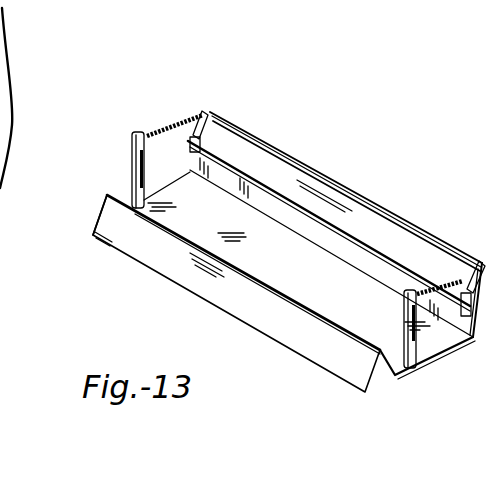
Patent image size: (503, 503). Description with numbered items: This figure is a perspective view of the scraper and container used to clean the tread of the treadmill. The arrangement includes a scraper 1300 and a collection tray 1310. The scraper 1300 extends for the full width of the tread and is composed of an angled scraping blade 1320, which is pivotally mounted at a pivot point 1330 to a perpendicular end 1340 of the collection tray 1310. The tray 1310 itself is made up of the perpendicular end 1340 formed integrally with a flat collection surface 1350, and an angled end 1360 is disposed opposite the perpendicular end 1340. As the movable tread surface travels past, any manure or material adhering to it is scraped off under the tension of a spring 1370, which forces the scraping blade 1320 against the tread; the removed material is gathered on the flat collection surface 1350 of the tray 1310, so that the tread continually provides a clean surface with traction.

The scraper 1300 is at (303, 313).
The collection tray 1310 is at (269, 225).
The angled scraping blade 1320 is at (263, 283).
The pivot point 1330 is at (105, 195).
The perpendicular end 1340 is at (152, 243).
The flat collection surface 1350 is at (147, 136).
The angled end 1360 is at (240, 150).
The spring 1370 is at (186, 178).